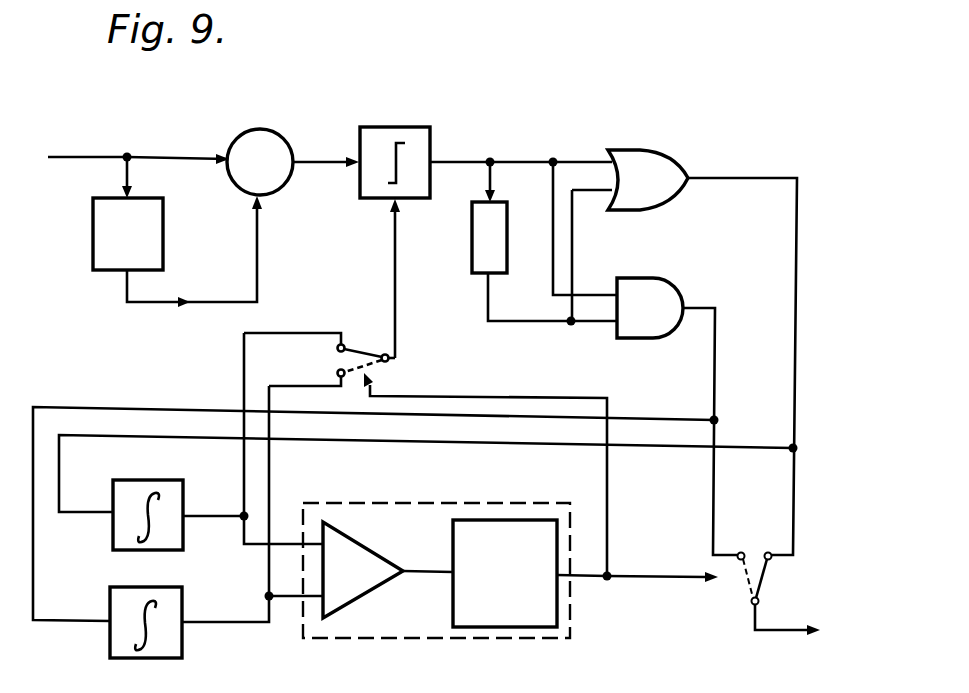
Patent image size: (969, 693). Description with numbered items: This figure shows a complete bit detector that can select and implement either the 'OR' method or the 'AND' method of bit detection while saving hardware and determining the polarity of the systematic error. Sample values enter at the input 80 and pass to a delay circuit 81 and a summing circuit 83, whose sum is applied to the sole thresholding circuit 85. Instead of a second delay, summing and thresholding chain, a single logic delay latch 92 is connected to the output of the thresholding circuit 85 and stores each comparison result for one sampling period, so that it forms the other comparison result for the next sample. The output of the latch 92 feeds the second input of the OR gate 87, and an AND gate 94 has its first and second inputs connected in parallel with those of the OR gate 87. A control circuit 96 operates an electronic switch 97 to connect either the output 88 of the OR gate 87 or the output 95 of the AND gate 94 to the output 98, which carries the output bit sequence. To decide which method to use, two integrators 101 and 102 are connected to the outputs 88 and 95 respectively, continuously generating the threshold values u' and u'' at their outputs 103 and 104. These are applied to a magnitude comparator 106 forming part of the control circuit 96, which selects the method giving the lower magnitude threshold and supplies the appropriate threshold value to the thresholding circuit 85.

The input 80 is at (73, 159).
The delay circuit 81 is at (163, 233).
The summing circuit 83 is at (284, 188).
The thresholding circuit 85 is at (394, 127).
The OR gate 87 is at (640, 150).
The output of the OR gate 88 is at (731, 177).
The logic delay latch 92 is at (472, 249).
The AND gate 94 is at (643, 278).
The output of the AND gate 95 is at (716, 345).
The control circuit 96 is at (505, 520).
The electronic switch 97 is at (745, 581).
The output 98 is at (781, 629).
The integrator 101 is at (113, 492).
The integrator 102 is at (110, 600).
The output of the integrator 103 is at (210, 518).
The output of the integrator 104 is at (210, 624).
The magnitude comparator 106 is at (358, 543).